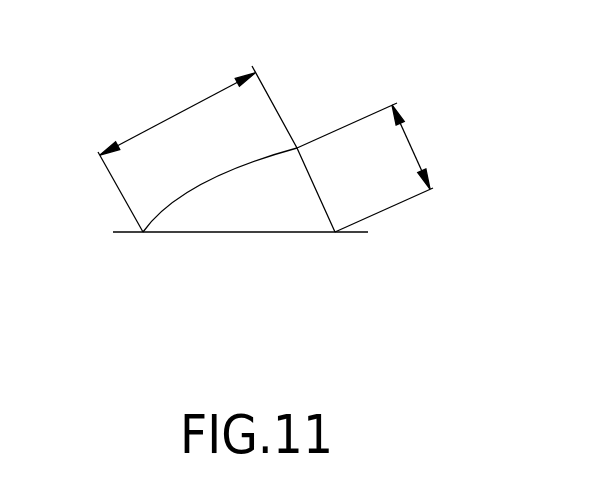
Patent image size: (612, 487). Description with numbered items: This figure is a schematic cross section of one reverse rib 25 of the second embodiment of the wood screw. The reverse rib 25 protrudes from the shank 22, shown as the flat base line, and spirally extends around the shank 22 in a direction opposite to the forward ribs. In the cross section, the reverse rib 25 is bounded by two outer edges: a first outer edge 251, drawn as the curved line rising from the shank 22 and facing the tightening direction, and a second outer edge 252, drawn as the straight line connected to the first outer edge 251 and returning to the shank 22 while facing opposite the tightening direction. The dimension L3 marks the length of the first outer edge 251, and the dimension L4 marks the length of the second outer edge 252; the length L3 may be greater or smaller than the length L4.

The shank 22 is at (210, 233).
The reverse rib 25 is at (272, 117).
The first outer edge 251 is at (192, 193).
The second outer edge 252 is at (309, 171).
The length of the first outer edge L3 is at (176, 152).
The length of the second outer edge L4 is at (375, 167).